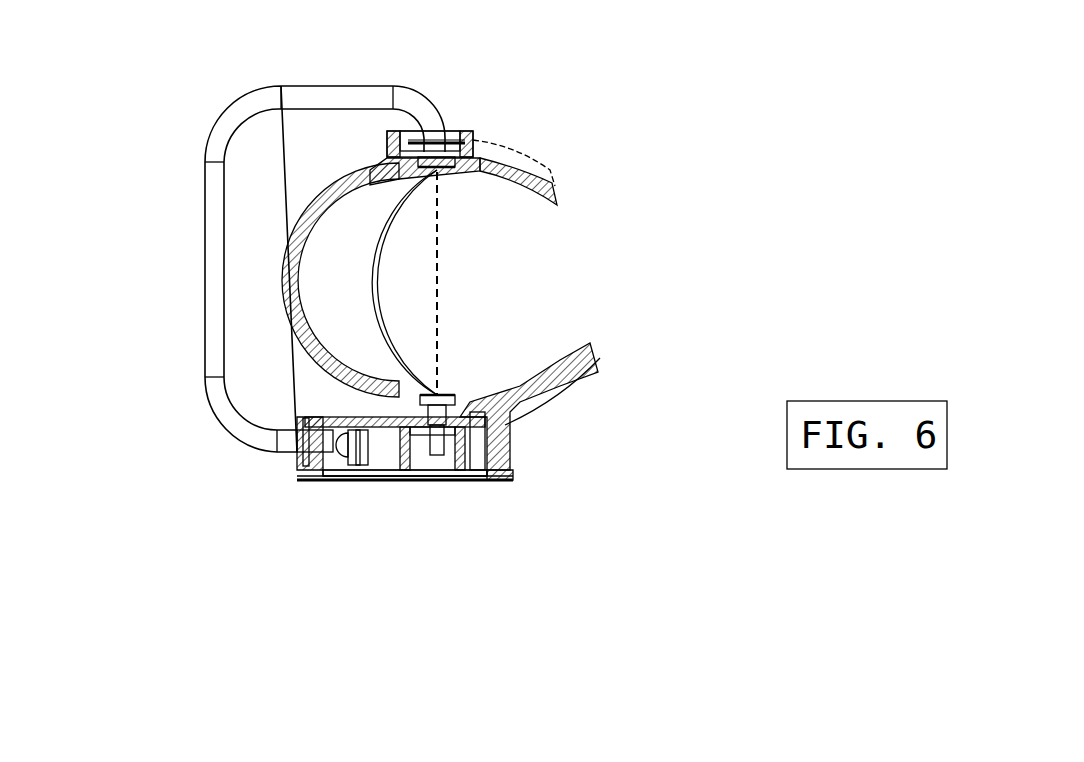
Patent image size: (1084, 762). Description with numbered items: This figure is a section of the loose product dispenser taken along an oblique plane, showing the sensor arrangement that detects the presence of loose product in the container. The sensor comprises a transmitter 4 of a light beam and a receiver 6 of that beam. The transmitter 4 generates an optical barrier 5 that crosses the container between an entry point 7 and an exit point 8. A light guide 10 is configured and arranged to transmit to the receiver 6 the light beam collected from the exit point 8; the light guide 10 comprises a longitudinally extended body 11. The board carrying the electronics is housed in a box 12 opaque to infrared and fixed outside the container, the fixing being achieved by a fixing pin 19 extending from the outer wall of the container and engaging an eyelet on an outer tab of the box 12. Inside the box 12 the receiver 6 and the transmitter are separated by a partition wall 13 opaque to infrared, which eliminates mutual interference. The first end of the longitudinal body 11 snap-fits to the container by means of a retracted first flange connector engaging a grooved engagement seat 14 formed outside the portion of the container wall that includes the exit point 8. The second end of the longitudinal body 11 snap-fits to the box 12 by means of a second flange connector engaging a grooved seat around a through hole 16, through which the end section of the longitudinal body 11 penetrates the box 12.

The transmitter 4 is at (495, 427).
The optical barrier 5 is at (437, 255).
The receiver 6 is at (347, 478).
The entry point 7 is at (440, 393).
The exit point 8 is at (556, 198).
The light guide 10 is at (203, 314).
The longitudinally extended body 11 is at (205, 250).
The box 12 is at (472, 480).
The partition wall 13 is at (407, 480).
The grooved engagement seat 14 is at (470, 133).
The through hole 16 is at (300, 480).
The fixing pin 19 is at (518, 458).